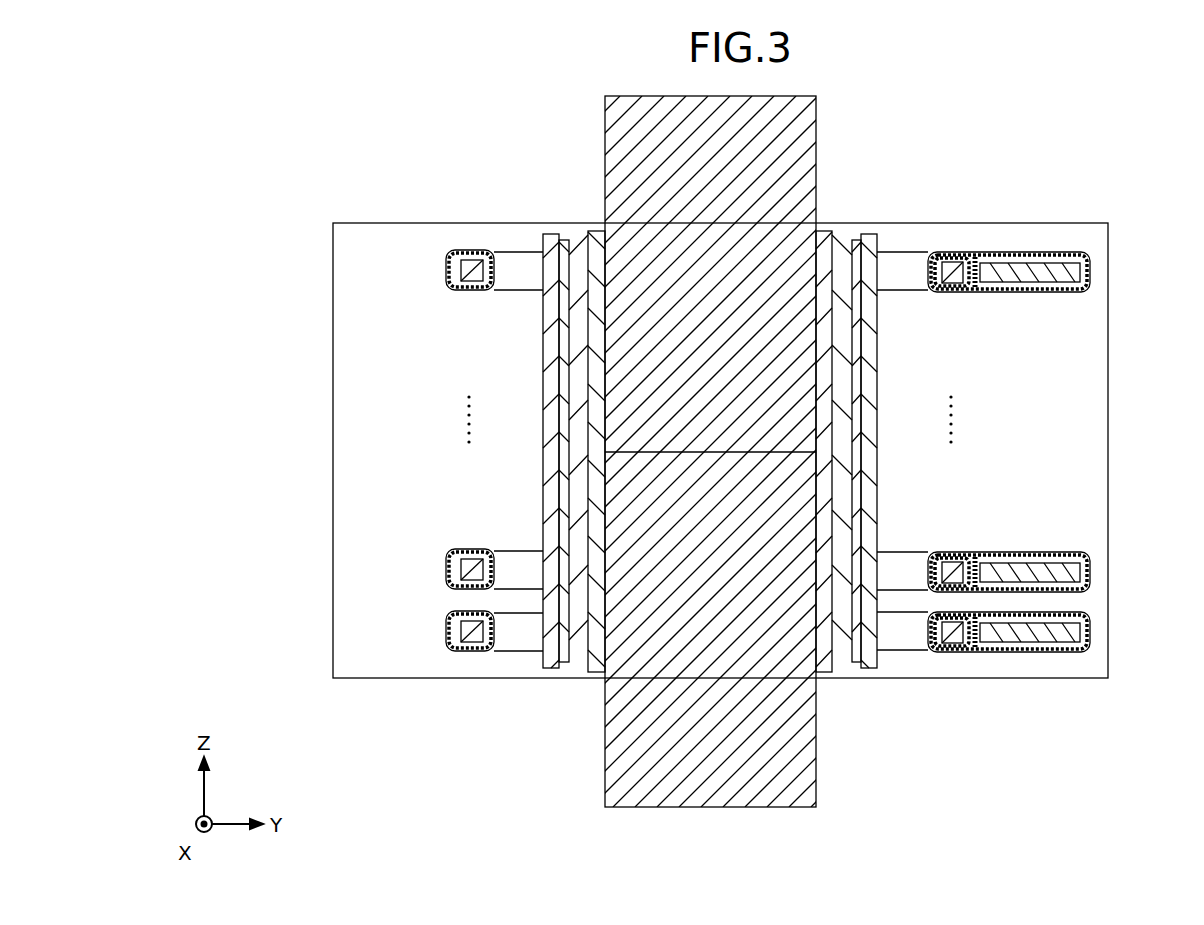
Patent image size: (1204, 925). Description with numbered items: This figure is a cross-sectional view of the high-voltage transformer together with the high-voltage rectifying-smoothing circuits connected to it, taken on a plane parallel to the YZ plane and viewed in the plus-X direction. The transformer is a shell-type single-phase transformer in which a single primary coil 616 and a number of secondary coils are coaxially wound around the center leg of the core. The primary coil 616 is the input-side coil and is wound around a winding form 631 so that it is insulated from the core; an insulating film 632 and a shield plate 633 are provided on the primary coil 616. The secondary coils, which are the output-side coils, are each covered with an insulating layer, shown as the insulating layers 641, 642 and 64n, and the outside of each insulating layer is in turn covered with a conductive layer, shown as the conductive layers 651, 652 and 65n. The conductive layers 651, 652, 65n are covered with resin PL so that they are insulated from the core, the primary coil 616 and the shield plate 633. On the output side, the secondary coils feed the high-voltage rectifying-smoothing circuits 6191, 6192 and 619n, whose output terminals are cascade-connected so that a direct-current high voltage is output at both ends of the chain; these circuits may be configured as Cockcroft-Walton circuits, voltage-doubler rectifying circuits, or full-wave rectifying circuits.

The resin PL is at (392, 418).
The shield plate 633 is at (868, 242).
The insulating film 632 is at (565, 655).
The winding form 631 is at (597, 663).
The primary coil 616 is at (843, 655).
The insulating layer 64n is at (446, 272).
The conductive layer 65n is at (447, 280).
The high-voltage rectifying-smoothing circuit 619n is at (1072, 268).
The insulating layer 642 is at (447, 570).
The conductive layer 652 is at (446, 580).
The high-voltage rectifying-smoothing circuit 6192 is at (1070, 570).
The insulating layer 641 is at (447, 632).
The conductive layer 651 is at (446, 642).
The high-voltage rectifying-smoothing circuit 6191 is at (1070, 631).